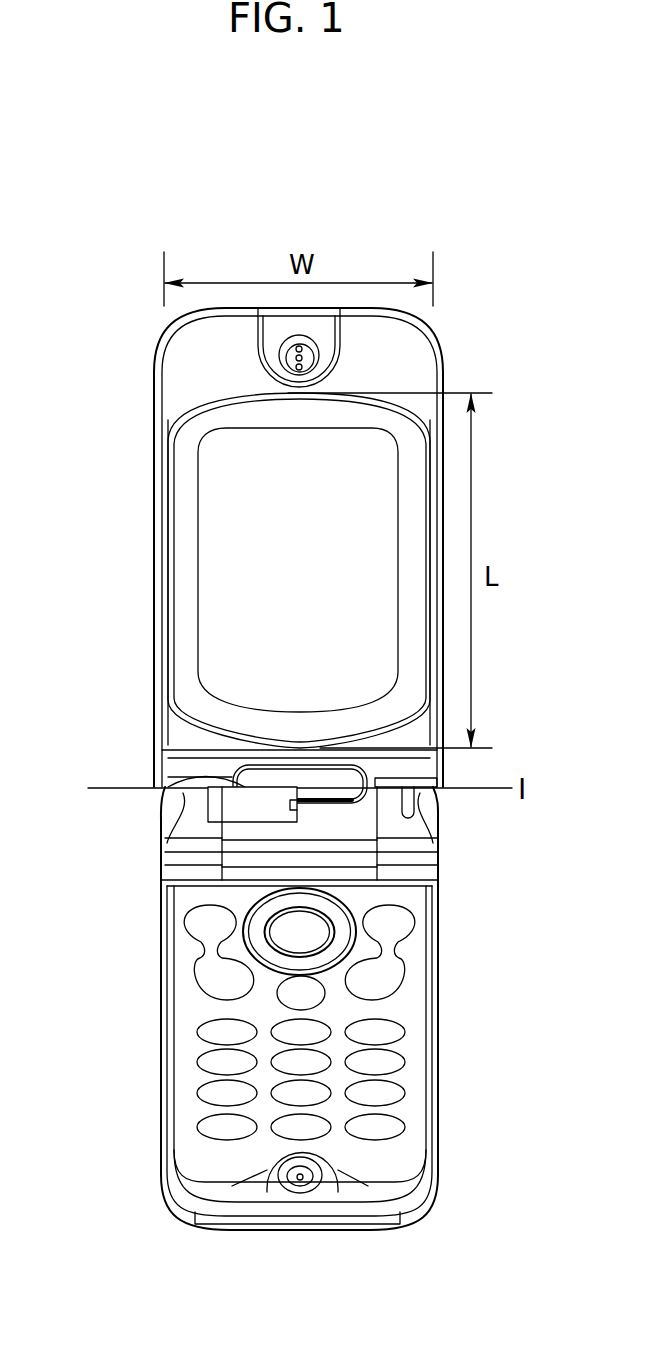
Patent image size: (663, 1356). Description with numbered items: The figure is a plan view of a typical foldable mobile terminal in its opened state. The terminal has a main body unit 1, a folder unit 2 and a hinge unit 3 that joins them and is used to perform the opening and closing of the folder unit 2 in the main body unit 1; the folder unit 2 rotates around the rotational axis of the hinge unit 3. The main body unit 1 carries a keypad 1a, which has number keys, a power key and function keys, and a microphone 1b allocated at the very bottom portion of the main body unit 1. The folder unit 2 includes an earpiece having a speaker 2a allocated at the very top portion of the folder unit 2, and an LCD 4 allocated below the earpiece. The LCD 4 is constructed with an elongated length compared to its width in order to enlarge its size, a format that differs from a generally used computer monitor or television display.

The main body unit 1 is at (112, 990).
The keypad 1a is at (392, 1013).
The microphone 1b is at (300, 1177).
The folder unit 2 is at (110, 567).
The speaker 2a is at (286, 358).
The hinge unit 3 is at (247, 778).
The LCD 4 is at (309, 573).